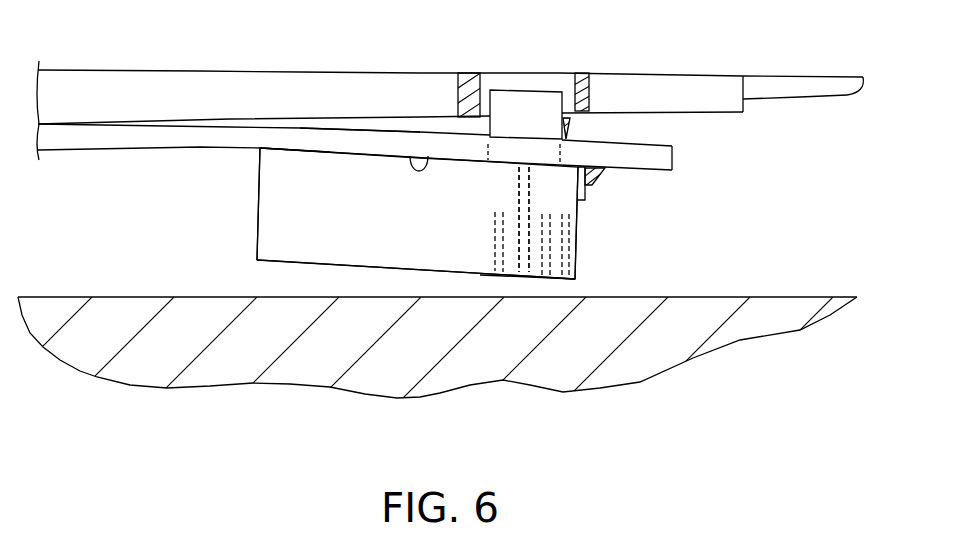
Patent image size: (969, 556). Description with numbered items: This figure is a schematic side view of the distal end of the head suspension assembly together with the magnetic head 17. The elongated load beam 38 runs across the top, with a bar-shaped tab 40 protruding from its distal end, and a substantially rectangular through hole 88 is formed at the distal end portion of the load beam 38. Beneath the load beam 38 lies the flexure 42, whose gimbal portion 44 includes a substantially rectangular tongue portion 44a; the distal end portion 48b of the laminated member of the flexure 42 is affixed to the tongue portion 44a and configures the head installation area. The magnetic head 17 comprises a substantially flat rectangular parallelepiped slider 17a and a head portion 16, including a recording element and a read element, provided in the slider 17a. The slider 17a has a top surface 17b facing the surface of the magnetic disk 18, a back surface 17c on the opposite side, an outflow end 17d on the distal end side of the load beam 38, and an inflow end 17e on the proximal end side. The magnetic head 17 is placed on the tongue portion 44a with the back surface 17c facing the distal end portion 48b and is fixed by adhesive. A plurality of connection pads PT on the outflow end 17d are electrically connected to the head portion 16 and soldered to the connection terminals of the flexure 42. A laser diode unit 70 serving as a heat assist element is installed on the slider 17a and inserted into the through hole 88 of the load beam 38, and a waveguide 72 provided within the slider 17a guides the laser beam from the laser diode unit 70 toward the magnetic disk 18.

The head portion 16 is at (543, 293).
The magnetic head 17 is at (276, 223).
The slider 17a is at (341, 228).
The top surface (ABS) 17b is at (404, 270).
The back surface 17c is at (332, 151).
The outflow end 17d is at (577, 226).
The inflow end 17e is at (259, 174).
The magnetic disk 18 is at (723, 340).
The load beam 38 is at (235, 84).
The tab 40 is at (801, 84).
The flexure 42 is at (101, 148).
The gimbal portion 44 is at (357, 116).
The tongue portion 44a is at (385, 147).
The distal end portion 48b is at (428, 156).
The laser diode unit (LDU) 70 is at (522, 103).
The waveguide 72 is at (517, 185).
The through hole 88 is at (568, 73).
The connection pad PT is at (585, 190).